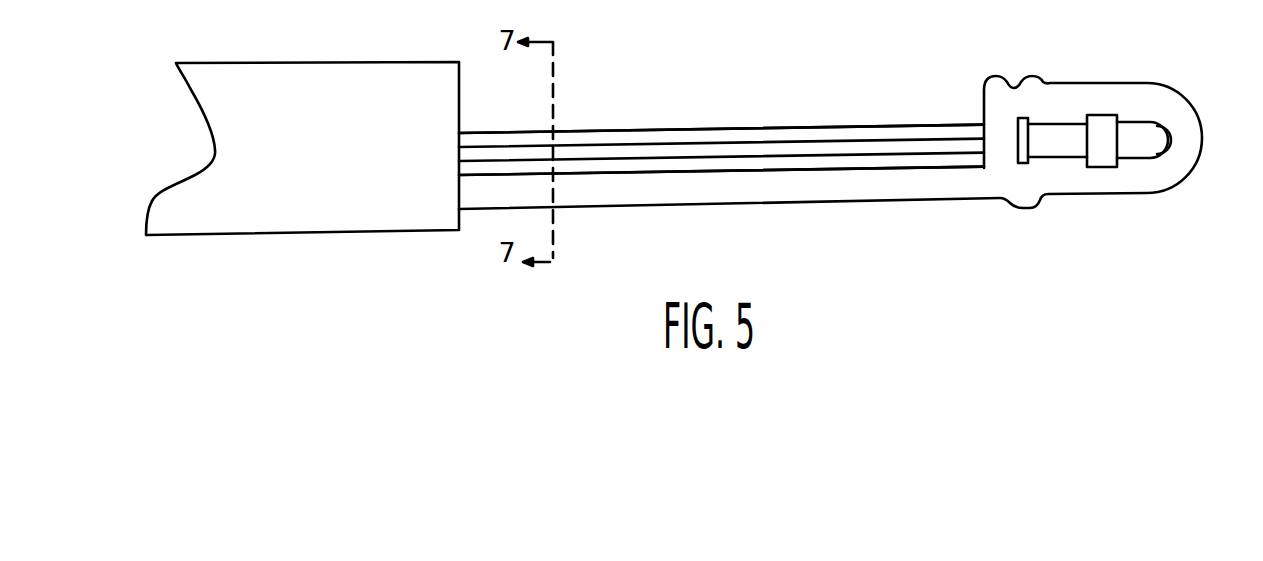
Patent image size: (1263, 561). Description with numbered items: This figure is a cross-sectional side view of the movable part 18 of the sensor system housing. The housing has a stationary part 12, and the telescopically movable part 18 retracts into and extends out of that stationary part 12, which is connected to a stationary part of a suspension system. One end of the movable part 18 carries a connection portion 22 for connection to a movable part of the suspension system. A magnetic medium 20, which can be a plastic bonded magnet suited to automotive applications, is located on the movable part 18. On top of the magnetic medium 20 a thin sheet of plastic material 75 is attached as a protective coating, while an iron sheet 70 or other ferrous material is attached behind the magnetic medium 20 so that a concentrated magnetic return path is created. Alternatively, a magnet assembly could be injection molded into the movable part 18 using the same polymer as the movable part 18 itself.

The stationary part 12 is at (307, 157).
The movable part 18 is at (1127, 98).
The magnetic medium 20 is at (833, 147).
The connection portion 22 is at (1143, 155).
The iron sheet 70 is at (773, 165).
The thin sheet of plastic material 75 is at (645, 135).